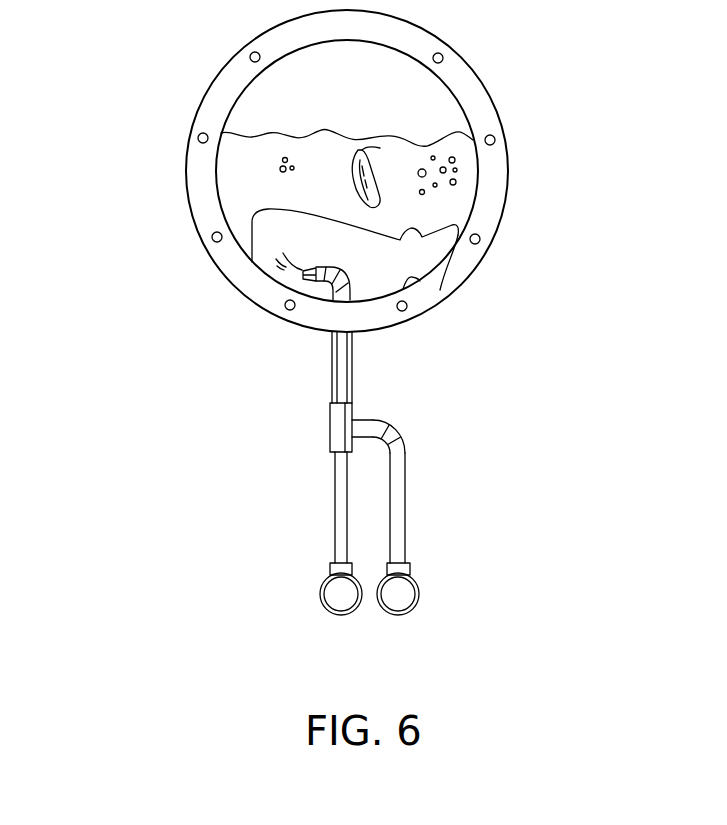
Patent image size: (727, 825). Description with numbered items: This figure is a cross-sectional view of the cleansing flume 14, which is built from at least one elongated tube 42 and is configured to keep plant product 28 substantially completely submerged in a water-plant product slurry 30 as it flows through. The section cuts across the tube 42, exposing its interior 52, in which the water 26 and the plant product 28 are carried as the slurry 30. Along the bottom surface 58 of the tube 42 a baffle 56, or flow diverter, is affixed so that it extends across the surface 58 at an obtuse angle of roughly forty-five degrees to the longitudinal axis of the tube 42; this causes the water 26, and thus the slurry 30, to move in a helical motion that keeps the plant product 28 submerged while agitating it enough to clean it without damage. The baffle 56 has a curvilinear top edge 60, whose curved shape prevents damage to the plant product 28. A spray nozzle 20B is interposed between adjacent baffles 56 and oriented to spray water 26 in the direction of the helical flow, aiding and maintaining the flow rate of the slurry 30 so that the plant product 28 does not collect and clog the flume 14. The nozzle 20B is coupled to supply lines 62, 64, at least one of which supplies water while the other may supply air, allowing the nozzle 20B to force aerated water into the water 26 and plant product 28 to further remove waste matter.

The cleansing flume 14 is at (135, 302).
The spray nozzle 20B is at (327, 273).
The water 26 is at (293, 158).
The plant product 28 is at (360, 157).
The water-plant product slurry 30 is at (236, 177).
The tube 42 is at (498, 207).
The interior 52 is at (448, 124).
The baffle 56 is at (283, 240).
The bottom surface 58 is at (440, 290).
The curvilinear top edge 60 is at (424, 230).
The supply line 62 is at (334, 518).
The supply line 64 is at (400, 510).